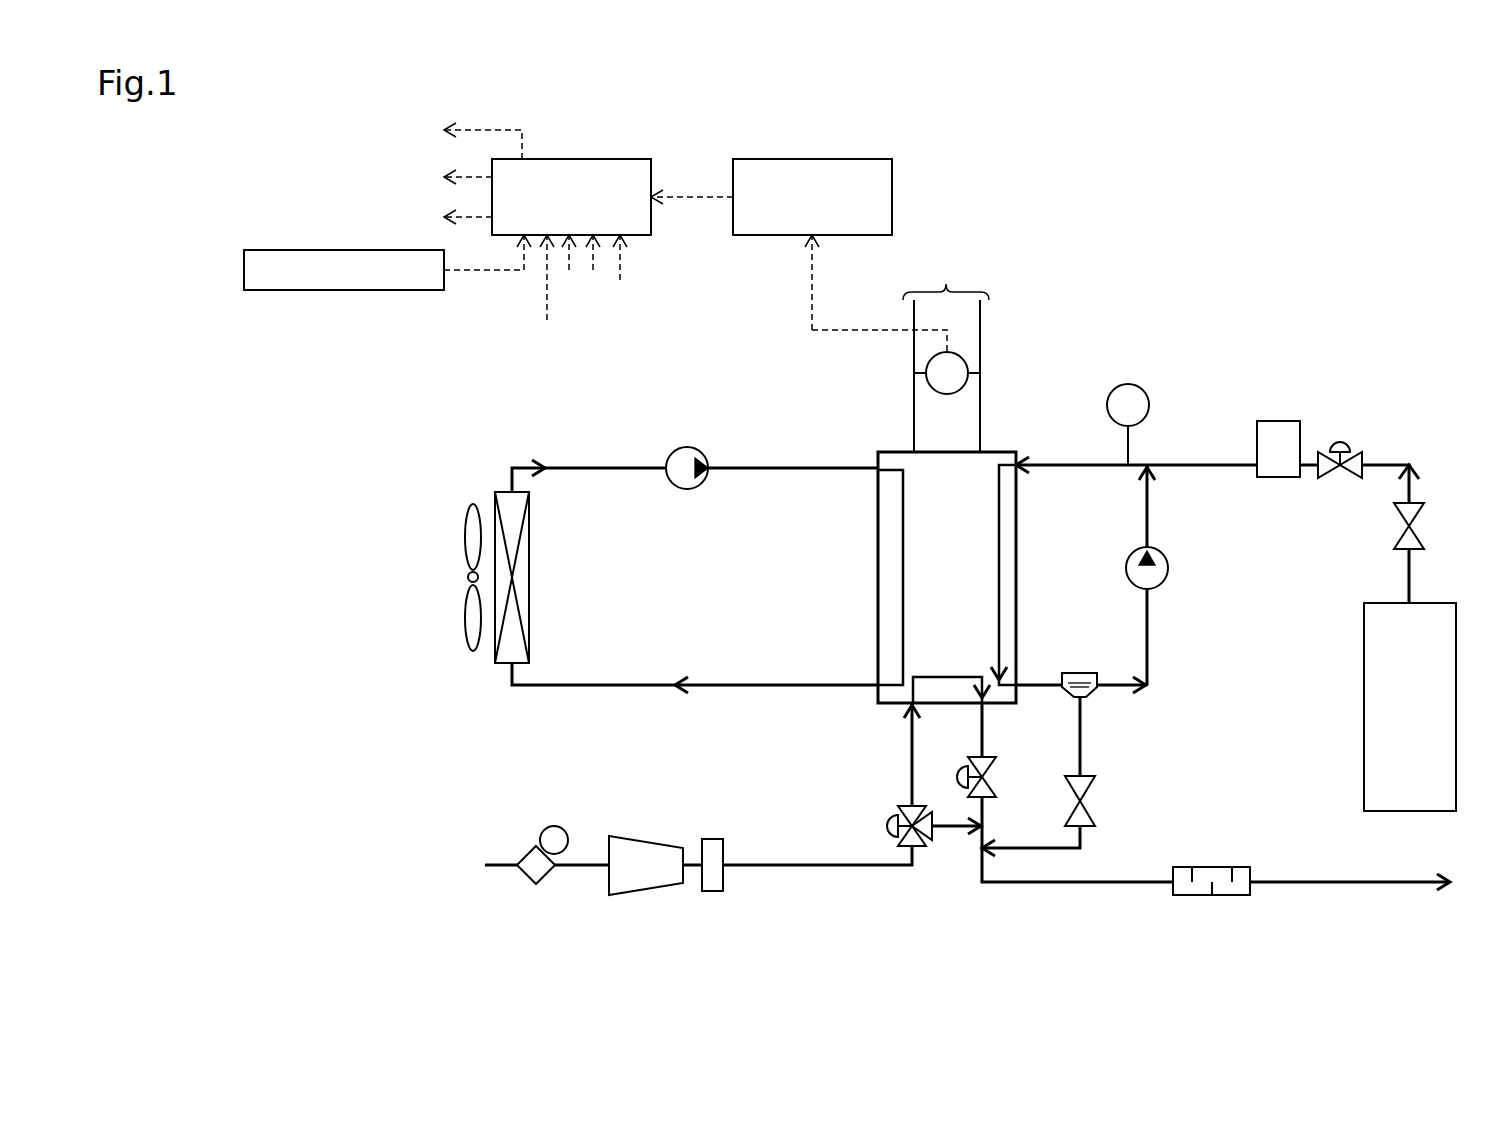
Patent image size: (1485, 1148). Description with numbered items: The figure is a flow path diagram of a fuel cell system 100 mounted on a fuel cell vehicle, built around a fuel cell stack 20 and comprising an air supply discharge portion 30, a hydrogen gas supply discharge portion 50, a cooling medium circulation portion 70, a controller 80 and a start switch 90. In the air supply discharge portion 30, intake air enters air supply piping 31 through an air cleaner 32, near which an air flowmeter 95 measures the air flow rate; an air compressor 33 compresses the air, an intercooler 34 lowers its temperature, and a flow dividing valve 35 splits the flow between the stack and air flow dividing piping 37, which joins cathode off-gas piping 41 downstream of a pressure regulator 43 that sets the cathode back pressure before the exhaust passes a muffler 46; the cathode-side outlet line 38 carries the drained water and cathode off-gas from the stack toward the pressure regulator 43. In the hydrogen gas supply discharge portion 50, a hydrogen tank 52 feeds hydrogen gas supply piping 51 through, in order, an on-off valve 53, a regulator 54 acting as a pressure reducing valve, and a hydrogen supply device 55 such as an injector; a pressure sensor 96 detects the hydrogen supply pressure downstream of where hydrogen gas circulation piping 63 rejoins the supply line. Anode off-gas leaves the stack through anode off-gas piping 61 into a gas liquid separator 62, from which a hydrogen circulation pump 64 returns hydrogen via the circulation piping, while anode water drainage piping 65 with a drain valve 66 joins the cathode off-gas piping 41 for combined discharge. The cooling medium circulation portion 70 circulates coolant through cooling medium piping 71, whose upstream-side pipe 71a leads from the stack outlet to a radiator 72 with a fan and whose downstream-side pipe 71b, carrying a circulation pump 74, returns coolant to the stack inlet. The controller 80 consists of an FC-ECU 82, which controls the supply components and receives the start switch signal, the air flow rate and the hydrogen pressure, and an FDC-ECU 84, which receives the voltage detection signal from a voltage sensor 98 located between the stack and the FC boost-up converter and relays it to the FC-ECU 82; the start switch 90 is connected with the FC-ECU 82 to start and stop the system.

The fuel cell system 100 is at (1088, 195).
The controller 80 is at (783, 141).
The FC-ECU 82 is at (619, 160).
The FDC-ECU 84 is at (860, 160).
The start switch 90 is at (300, 291).
The fuel cell stack 20 is at (998, 462).
The voltage sensor 98 is at (970, 383).
The cooling medium circulation portion 70 is at (740, 445).
The cooling medium piping 71 is at (695, 543).
The upstream-side pipe 71a is at (628, 684).
The downstream-side pipe 71b is at (603, 466).
The radiator 72 is at (505, 492).
The circulation pump 74 is at (686, 490).
The hydrogen gas supply discharge portion 50 is at (1338, 392).
The hydrogen gas supply piping 51 is at (1172, 465).
The hydrogen tank 52 is at (1430, 603).
The on-off valve 53 is at (1398, 530).
The regulator 54 is at (1365, 448).
The hydrogen supply device 55 is at (1270, 421).
The anode off-gas piping 61 is at (1055, 726).
The gas liquid separator 62 is at (1090, 697).
The hydrogen gas circulation piping 63 is at (1150, 635).
The hydrogen circulation pump 64 is at (1170, 568).
The anode water drainage piping 65 is at (1082, 757).
The drain valve 66 is at (1097, 813).
The pressure sensor 96 is at (1125, 385).
The air supply discharge portion 30 is at (448, 812).
The air supply piping 31 is at (850, 865).
The air cleaner 32 is at (525, 852).
The air compressor 33 is at (645, 838).
The intercooler 34 is at (710, 838).
The flow dividing valve 35 is at (918, 848).
The air flow dividing piping 37 is at (947, 830).
The cathode off-gas pipe 38 is at (985, 737).
The cathode off-gas piping 41 is at (1025, 882).
The pressure regulator 43 is at (972, 772).
The muffler 46 is at (1215, 867).
The air flowmeter 95 is at (565, 828).